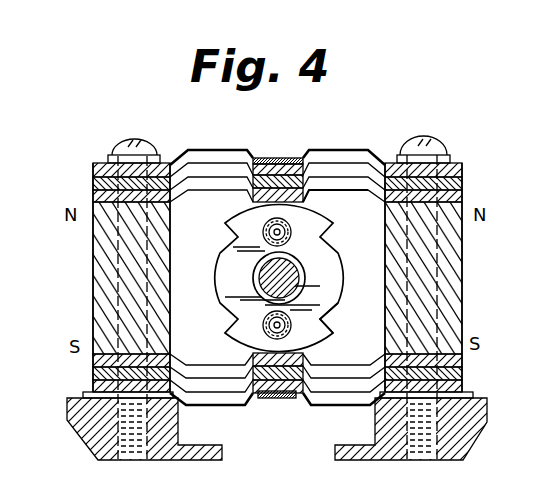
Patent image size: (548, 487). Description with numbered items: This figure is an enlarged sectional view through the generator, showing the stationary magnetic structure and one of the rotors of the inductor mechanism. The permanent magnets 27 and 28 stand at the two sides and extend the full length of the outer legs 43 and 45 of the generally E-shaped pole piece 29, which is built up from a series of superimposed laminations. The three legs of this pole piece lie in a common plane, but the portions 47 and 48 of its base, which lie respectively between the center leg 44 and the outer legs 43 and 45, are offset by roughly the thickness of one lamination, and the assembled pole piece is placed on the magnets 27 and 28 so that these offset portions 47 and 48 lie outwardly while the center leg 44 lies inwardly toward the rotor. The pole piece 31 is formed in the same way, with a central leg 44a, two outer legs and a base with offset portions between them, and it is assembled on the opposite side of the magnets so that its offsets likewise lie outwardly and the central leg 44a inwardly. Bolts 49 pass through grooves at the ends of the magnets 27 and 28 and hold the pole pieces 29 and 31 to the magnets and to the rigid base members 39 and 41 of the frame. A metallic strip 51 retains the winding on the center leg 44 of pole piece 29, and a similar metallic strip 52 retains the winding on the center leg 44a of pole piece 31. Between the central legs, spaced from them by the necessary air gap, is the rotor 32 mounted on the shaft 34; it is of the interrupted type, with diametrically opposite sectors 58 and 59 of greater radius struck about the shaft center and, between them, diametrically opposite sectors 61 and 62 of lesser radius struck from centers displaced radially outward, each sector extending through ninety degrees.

The permanent magnet 27 is at (93, 268).
The permanent magnet 28 is at (463, 262).
The pole piece 29 is at (463, 184).
The pole piece 31 is at (464, 375).
The rotor 32 is at (318, 335).
The shaft 34 is at (288, 283).
The base member 39 is at (90, 441).
The base member 41 is at (470, 436).
The outer leg 43 is at (98, 163).
The center leg 44 is at (306, 153).
The central leg 44a is at (287, 399).
The outer leg 45 is at (456, 160).
The offset portion of the base 47 is at (208, 153).
The offset portion of the base 48 is at (343, 150).
The bolts 49 is at (141, 150).
The metallic strip 51 is at (283, 157).
The metallic strip 52 is at (275, 399).
The sector 58 is at (245, 222).
The sector 59 is at (318, 330).
The sector 61 is at (240, 257).
The sector 62 is at (327, 265).